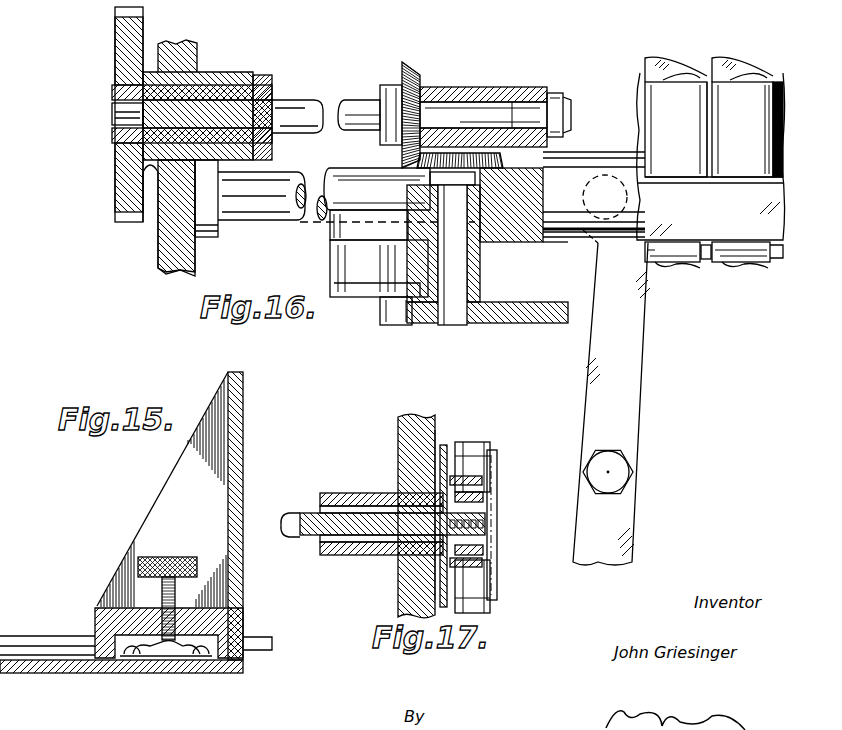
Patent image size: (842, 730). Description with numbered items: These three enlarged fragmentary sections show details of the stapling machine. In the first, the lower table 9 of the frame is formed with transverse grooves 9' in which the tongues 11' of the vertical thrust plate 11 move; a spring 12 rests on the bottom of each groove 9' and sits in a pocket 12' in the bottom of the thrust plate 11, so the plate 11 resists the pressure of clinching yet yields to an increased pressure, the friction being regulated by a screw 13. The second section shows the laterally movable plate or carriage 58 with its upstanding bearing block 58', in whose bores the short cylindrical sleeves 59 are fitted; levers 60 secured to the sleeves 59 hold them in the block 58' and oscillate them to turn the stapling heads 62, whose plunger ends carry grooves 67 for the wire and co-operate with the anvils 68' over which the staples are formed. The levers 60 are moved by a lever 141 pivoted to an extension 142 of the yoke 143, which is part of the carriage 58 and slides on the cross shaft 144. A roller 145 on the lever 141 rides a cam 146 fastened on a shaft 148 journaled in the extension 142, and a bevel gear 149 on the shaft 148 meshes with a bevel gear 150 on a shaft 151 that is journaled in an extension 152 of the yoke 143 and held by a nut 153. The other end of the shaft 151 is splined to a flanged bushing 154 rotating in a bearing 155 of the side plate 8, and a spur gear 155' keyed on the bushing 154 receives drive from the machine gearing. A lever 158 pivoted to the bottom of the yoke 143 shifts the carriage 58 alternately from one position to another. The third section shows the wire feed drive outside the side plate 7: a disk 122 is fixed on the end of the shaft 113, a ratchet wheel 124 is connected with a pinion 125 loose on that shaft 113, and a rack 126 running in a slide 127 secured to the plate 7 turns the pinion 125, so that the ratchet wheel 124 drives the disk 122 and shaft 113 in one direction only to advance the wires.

In FIG. 17, the side plate 7 is at (414, 416).
In FIG. 16, the side plate 8 is at (174, 244).
In FIG. 15, the table 9 is at (47, 667).
In FIG. 15, the transverse grooves 9' is at (47, 677).
In FIG. 15, the thrust plate 11 is at (170, 516).
In FIG. 15, the tongues 11' is at (140, 655).
In FIG. 15, the spring 12 is at (166, 669).
In FIG. 15, the pocket 12' is at (187, 632).
In FIG. 15, the screw 13 is at (160, 560).
In FIG. 16, the plate or carriage 58 is at (684, 146).
In FIG. 16, the upstanding bearing block 58' is at (727, 225).
In FIG. 16, the cylindrical sleeve 59 is at (723, 178).
In FIG. 16, the lever 60 is at (725, 262).
In FIG. 16, the stapling head 62 is at (648, 152).
In FIG. 16, the groove 67 is at (684, 72).
In FIG. 16, the anvil 68' is at (737, 53).
In FIG. 17, the shaft 113 is at (290, 514).
In FIG. 17, the disk 122 is at (447, 450).
In FIG. 17, the ratchet wheel 124 is at (470, 446).
In FIG. 17, the pinion 125 is at (488, 480).
In FIG. 17, the rack 126 is at (470, 592).
In FIG. 17, the slide 127 is at (497, 508).
In FIG. 16, the lever 141 is at (365, 290).
In FIG. 16, the extension 142 is at (338, 230).
In FIG. 16, the yoke 143 is at (522, 236).
In FIG. 16, the cross shaft 144 is at (258, 190).
In FIG. 16, the roller 145 is at (392, 320).
In FIG. 16, the cam 146 is at (512, 320).
In FIG. 16, the shaft 148 is at (455, 318).
In FIG. 16, the bevel gear 149 is at (420, 174).
In FIG. 16, the bevel gear 150 is at (410, 80).
In FIG. 16, the shaft 151 is at (358, 108).
In FIG. 16, the extension 152 is at (478, 90).
In FIG. 16, the nut 153 is at (562, 116).
In FIG. 16, the flanged bushing 154 is at (268, 86).
In FIG. 16, the bearing 155 is at (198, 100).
In FIG. 16, the spur gear 155' is at (108, 114).
In FIG. 16, the lever 158 is at (632, 380).